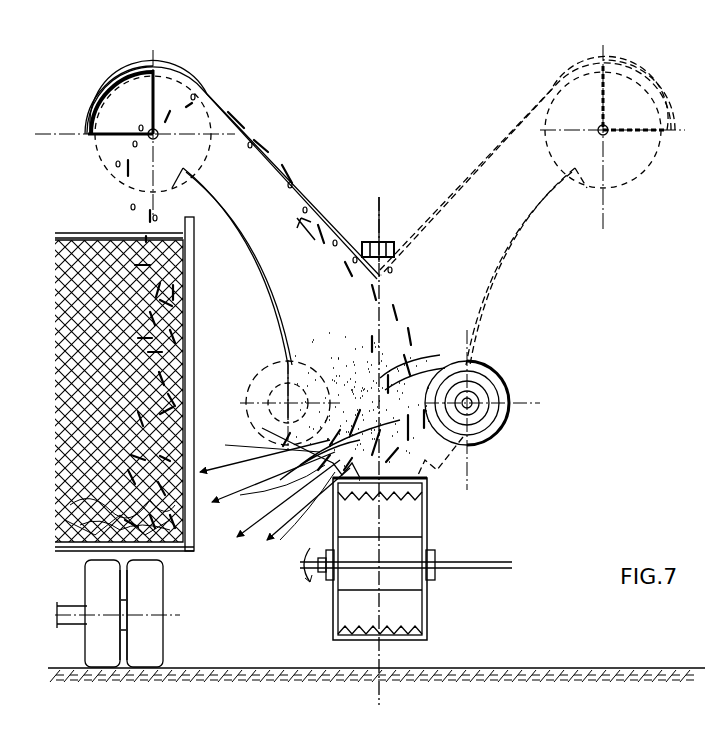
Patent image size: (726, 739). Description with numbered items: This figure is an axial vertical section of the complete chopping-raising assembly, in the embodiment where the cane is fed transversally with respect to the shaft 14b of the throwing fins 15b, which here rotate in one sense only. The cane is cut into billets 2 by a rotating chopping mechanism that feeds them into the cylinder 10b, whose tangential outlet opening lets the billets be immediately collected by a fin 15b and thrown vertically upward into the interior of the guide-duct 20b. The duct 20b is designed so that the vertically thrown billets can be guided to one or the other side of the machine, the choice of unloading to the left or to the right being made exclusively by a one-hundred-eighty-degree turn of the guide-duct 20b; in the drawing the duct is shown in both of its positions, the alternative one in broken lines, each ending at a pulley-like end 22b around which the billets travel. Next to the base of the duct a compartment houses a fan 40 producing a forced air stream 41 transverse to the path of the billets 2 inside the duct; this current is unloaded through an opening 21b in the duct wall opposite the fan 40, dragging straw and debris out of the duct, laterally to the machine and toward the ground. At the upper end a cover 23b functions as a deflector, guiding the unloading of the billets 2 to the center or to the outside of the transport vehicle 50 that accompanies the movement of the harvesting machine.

The billets 2 is at (283, 170).
The cylinder 10b is at (385, 563).
The shaft 14b is at (440, 563).
The throwing fins 15b is at (408, 520).
The guide-duct 20b is at (232, 118).
The opening 21b is at (260, 507).
The conveyor pulley 22b is at (97, 163).
The cover 23b is at (115, 78).
The fan 40 is at (472, 398).
The forced air stream 41 is at (310, 467).
The vehicle 50 is at (160, 552).